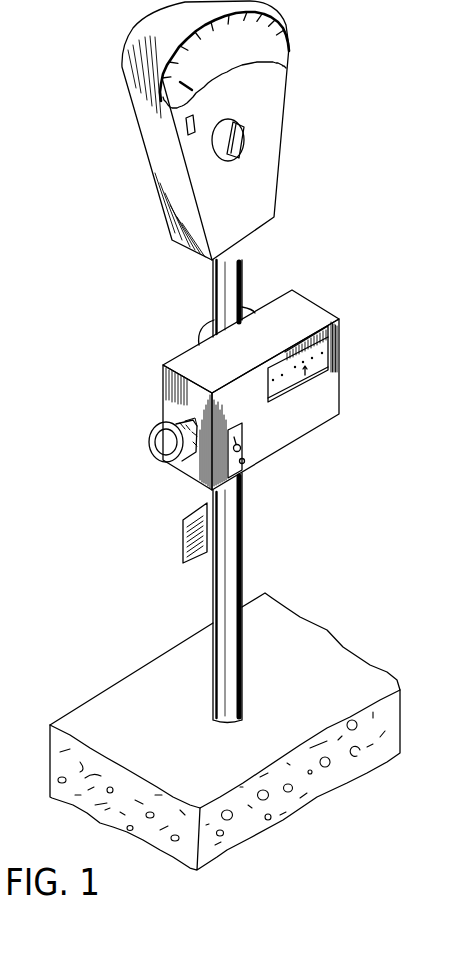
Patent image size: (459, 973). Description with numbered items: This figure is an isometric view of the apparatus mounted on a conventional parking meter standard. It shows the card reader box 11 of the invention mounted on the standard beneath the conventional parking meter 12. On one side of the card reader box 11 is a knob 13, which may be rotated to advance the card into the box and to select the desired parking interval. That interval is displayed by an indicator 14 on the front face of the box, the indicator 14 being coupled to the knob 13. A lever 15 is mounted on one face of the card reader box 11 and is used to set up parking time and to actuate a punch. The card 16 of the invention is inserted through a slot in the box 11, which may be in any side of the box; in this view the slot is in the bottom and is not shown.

The card reader box 11 is at (317, 296).
The conventional parking meter 12 is at (268, 123).
The knob 13 is at (162, 441).
The indicator 14 is at (320, 357).
The lever 15 is at (244, 451).
The card 16 is at (183, 542).